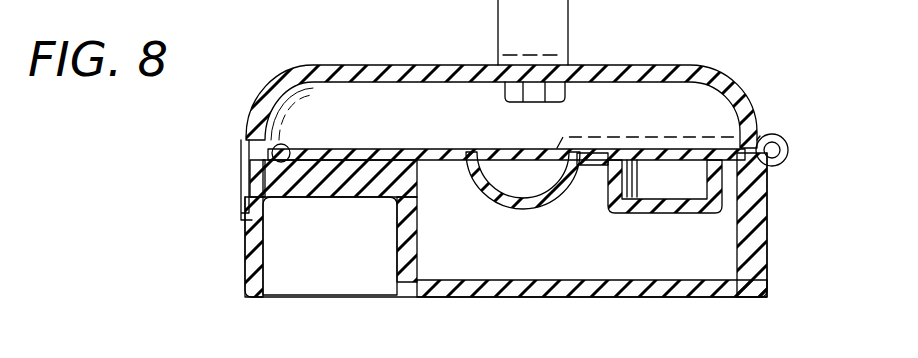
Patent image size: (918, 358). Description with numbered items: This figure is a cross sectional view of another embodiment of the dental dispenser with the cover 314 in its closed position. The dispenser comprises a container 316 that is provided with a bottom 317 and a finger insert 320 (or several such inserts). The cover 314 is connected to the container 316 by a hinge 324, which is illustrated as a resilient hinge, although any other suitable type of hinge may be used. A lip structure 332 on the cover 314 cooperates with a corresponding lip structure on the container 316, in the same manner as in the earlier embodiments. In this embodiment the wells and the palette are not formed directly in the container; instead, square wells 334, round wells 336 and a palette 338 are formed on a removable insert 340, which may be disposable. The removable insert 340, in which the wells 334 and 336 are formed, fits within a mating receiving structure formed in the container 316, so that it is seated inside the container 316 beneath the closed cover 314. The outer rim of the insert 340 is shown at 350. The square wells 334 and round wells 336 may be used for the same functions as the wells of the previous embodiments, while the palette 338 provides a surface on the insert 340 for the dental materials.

The cover 314 is at (642, 64).
The container 316 is at (768, 270).
The bottom 317 is at (625, 298).
The finger insert 320 is at (397, 258).
The hinge 324 is at (764, 135).
The lip structure 332 is at (241, 147).
The square well 334 is at (637, 168).
The round well 336 is at (519, 135).
The palette 338 is at (445, 113).
The removable insert 340 is at (372, 125).
The outer rim 350 is at (262, 177).